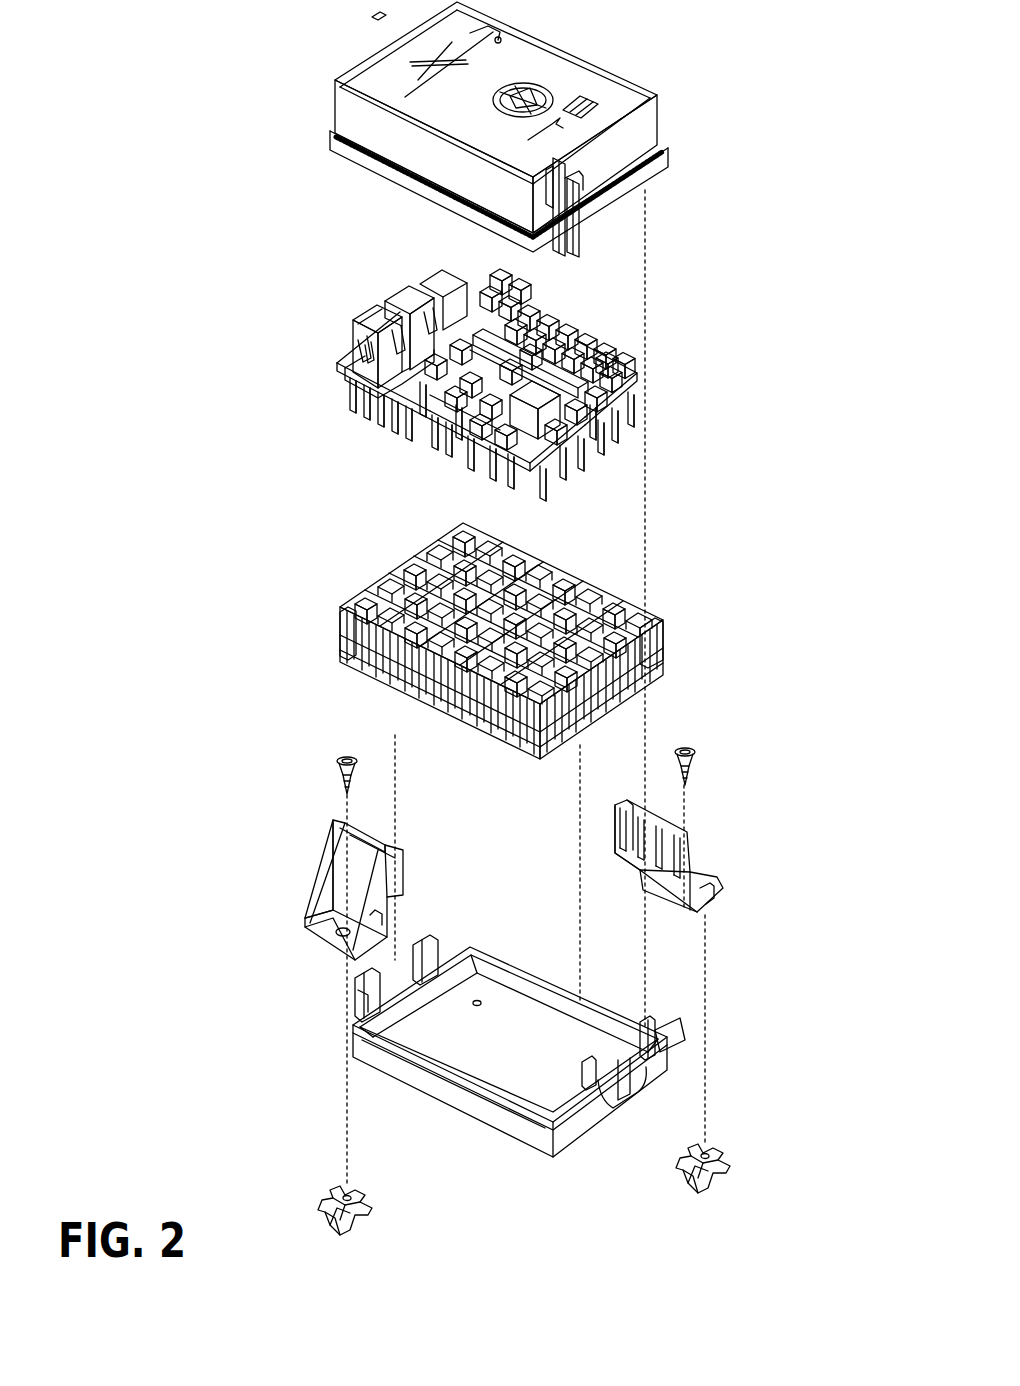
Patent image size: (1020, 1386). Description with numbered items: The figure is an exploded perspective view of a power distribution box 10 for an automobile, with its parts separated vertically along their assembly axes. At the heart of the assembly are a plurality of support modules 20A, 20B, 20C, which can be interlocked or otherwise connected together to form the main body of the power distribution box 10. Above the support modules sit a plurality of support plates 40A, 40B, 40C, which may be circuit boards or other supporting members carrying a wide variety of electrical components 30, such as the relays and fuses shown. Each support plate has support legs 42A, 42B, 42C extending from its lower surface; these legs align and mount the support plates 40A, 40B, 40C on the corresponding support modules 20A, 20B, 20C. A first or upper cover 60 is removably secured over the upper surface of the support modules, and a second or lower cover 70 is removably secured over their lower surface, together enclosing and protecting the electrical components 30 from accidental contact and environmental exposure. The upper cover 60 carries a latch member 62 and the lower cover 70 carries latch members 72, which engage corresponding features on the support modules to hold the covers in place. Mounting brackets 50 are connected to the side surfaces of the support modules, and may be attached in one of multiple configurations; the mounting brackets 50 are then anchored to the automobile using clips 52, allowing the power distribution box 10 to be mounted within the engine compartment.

The power distribution box 10 is at (768, 95).
The support module 20A is at (466, 748).
The support module 20B is at (674, 630).
The support module 20C is at (360, 582).
The electrical components 30 is at (470, 293).
The support plate 40A is at (514, 465).
The support plate 40B is at (655, 383).
The support plate 40C is at (340, 362).
The support leg 42A is at (497, 457).
The support leg 42B is at (625, 452).
The support leg 42C is at (368, 395).
The mounting bracket 50 is at (318, 912).
The clip 52 is at (340, 1232).
The upper cover 60 is at (557, 62).
The latch member 62 is at (579, 228).
The lower cover 70 is at (475, 1105).
The latch member 72 is at (385, 978).